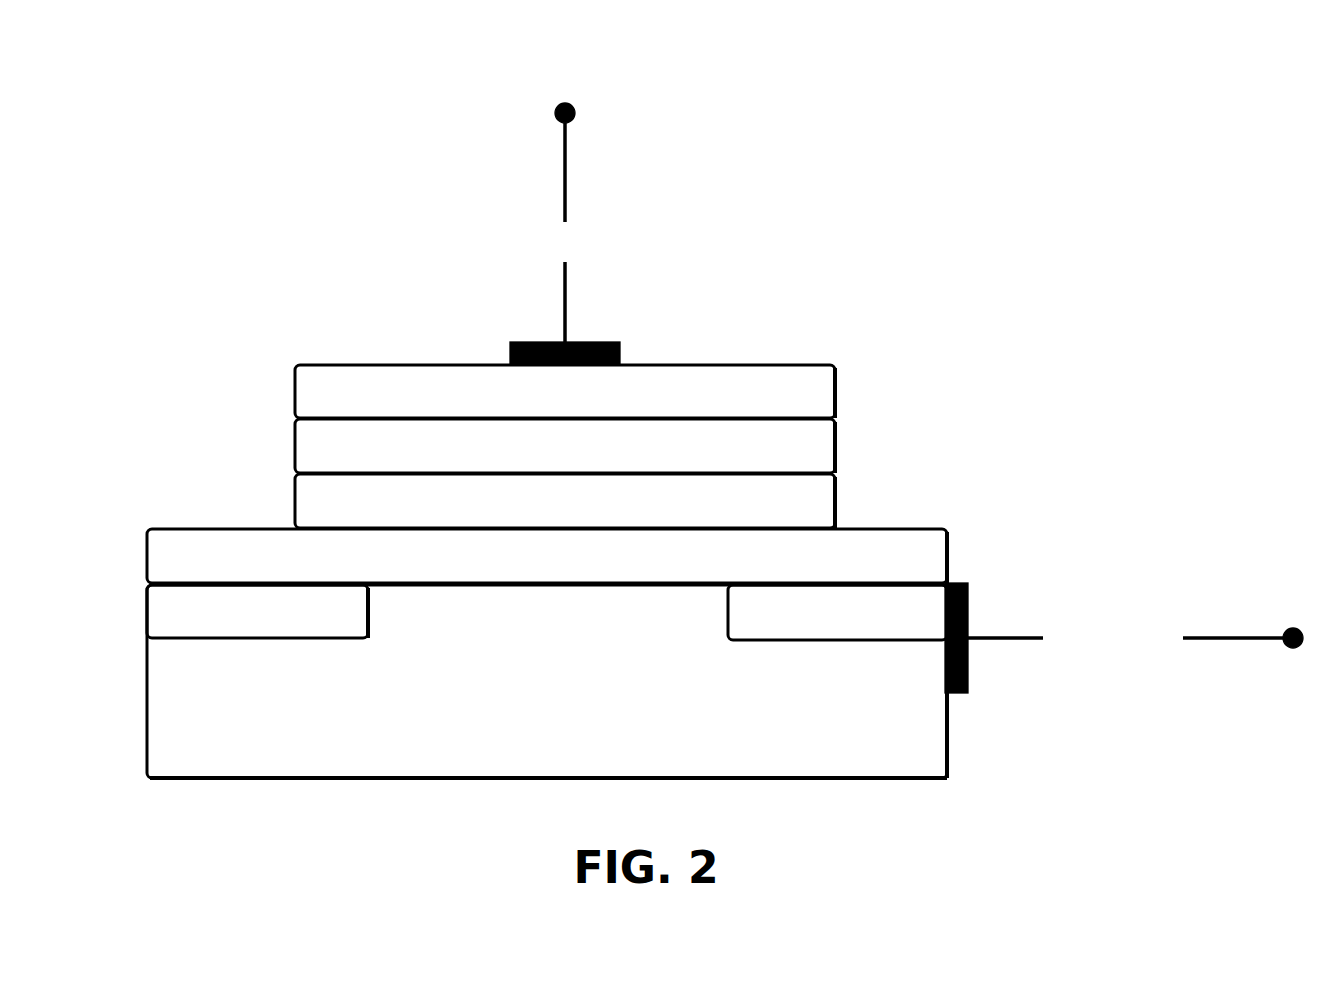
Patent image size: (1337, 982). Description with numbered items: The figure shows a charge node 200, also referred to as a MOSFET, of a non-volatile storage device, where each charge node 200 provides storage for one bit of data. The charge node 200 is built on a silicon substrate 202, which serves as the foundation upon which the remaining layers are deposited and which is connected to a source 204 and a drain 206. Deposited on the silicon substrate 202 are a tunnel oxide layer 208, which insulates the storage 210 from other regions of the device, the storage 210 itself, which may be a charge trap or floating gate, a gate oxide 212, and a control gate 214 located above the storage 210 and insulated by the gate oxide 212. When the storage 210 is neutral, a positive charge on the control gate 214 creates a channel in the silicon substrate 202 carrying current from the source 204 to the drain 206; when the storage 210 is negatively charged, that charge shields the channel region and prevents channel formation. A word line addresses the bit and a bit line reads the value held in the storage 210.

The charge node 200 is at (1237, 153).
The silicon substrate 202 is at (547, 681).
The source 204 is at (228, 639).
The drain 206 is at (830, 641).
The tunnel oxide layer 208 is at (950, 553).
The storage 210 is at (838, 496).
The gate oxide 212 is at (838, 446).
The control gate 214 is at (838, 390).